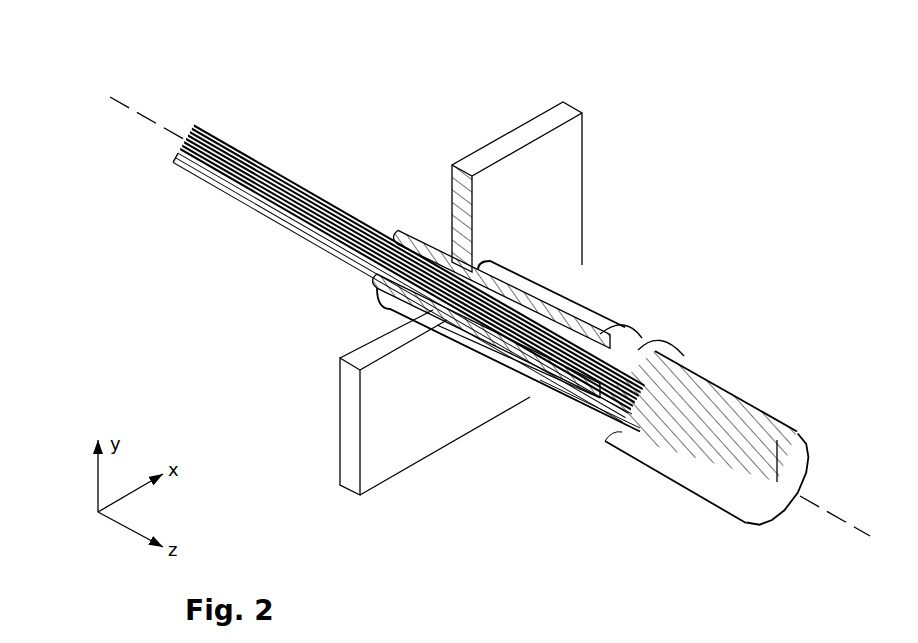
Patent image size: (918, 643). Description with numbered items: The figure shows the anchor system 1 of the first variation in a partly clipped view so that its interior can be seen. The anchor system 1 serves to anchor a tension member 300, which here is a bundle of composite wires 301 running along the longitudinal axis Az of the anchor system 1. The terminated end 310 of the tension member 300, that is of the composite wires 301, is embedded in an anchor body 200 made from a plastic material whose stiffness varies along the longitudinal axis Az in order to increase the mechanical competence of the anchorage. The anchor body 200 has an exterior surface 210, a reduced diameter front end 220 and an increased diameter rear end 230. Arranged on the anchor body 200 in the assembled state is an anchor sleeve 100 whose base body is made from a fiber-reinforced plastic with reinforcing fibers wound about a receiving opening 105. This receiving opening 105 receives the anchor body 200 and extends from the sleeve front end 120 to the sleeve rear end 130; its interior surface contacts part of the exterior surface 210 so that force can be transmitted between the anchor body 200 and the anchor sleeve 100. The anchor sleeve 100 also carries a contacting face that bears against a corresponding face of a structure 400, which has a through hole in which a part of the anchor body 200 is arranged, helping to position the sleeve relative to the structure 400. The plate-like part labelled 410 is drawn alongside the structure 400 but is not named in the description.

The anchor system 1 is at (131, 80).
The longitudinal axis Az is at (157, 125).
The anchor sleeve 100 is at (561, 295).
The receiving opening 105 is at (578, 410).
The sleeve front end 120 is at (437, 349).
The sleeve rear end 130 is at (641, 328).
The anchor body 200 is at (742, 385).
The exterior surface 210 is at (652, 350).
The reduced diameter front end 220 is at (388, 312).
The increased diameter rear end 230 is at (614, 457).
The tension member 300 is at (256, 232).
The composite wires 301 is at (242, 202).
The terminated end 310 is at (621, 425).
The structure 400 is at (486, 139).
The lower clamp plate 410 is at (448, 258).